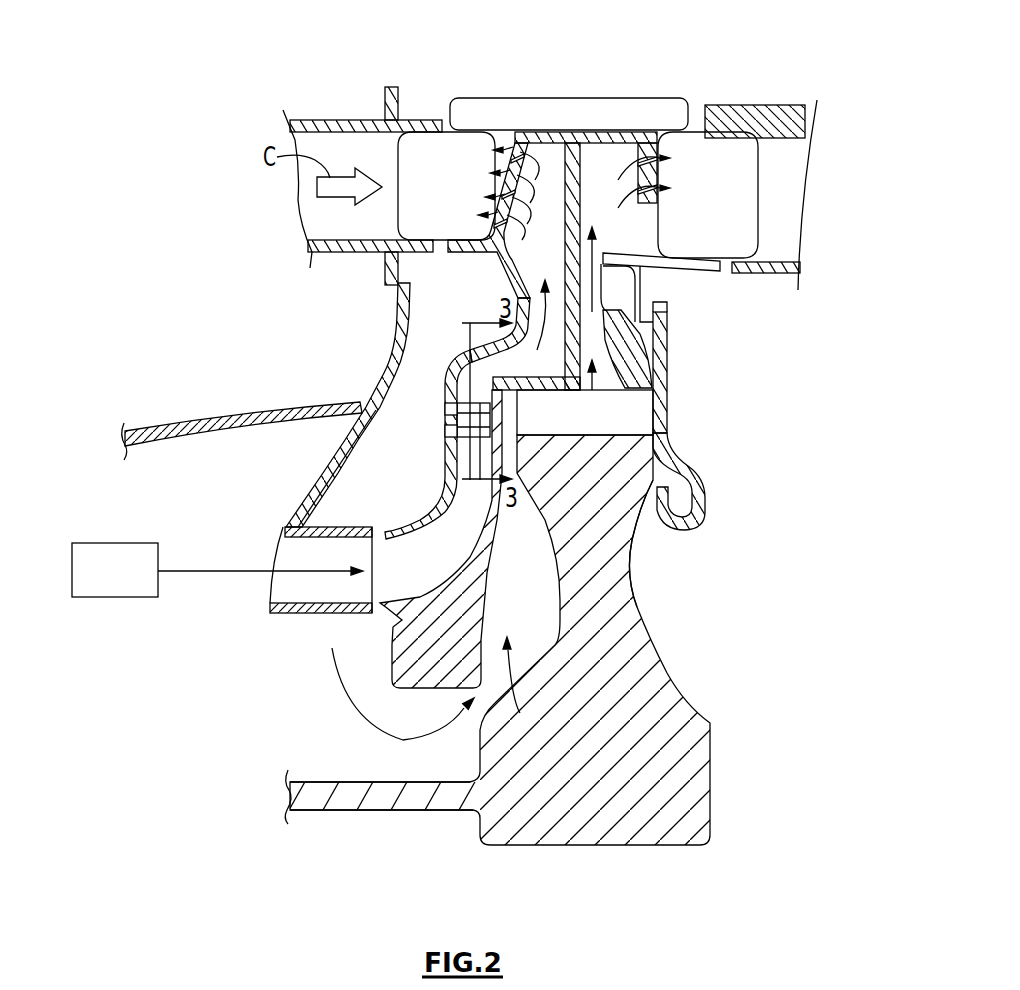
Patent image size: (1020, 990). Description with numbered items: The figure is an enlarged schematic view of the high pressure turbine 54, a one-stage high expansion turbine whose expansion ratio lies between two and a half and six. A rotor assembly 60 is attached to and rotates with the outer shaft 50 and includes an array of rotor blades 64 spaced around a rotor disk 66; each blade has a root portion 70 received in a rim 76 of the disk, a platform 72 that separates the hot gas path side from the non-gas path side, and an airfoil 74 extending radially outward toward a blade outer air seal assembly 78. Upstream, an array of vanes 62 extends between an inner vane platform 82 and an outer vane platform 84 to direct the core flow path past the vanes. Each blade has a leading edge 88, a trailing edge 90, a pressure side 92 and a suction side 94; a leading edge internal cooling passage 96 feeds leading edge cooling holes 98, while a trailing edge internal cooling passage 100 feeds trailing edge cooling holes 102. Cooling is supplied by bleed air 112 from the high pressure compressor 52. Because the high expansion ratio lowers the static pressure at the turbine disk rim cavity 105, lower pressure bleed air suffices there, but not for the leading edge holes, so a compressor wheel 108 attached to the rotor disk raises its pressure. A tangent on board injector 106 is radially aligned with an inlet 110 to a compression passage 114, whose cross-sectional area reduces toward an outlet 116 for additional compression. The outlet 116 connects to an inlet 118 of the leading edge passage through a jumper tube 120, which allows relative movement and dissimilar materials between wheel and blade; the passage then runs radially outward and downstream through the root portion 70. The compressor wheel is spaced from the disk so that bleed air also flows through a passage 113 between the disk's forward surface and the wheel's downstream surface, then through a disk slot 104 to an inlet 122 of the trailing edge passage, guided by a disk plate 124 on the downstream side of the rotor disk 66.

The outer shaft 50 is at (342, 812).
The high pressure compressor 52 is at (132, 587).
The high pressure turbine 54 is at (742, 72).
The rotor assembly 60 is at (712, 340).
The array of vanes 62 is at (330, 215).
The rotor blades 64 is at (672, 239).
The rotor disk 66 is at (664, 673).
The root portion 70 is at (662, 304).
The platform 72 is at (697, 266).
The airfoil 74 is at (660, 143).
The rim 76 is at (630, 488).
The blade outer air seal (BOAS) assembly 78 is at (583, 97).
The inner vane platform 82 is at (330, 248).
The outer vane platform 84 is at (318, 125).
The leading edge 88 is at (488, 162).
The trailing edge 90 is at (660, 190).
The pressure side 92 is at (673, 250).
The suction side 94 is at (508, 142).
The leading edge internal cooling passage 96 is at (540, 257).
The leading edge cooling holes 98 is at (488, 194).
The trailing edge internal cooling passage 100 is at (605, 214).
The trailing edge cooling holes 102 is at (660, 162).
The disk slot 104 is at (637, 425).
The turbine disk rim cavity 105 is at (440, 318).
The tangent on board injector (TOBI) 106 is at (292, 613).
The compressor wheel 108 is at (446, 470).
The inlet 110 is at (384, 565).
The bleed air 112 is at (518, 418).
The passage 113 is at (520, 713).
The compression passage 114 is at (445, 527).
The outlet 116 is at (449, 440).
The inlet 118 is at (463, 390).
The jumper tube 120 is at (452, 418).
The inlet 122 is at (619, 393).
The disk plate 124 is at (692, 443).